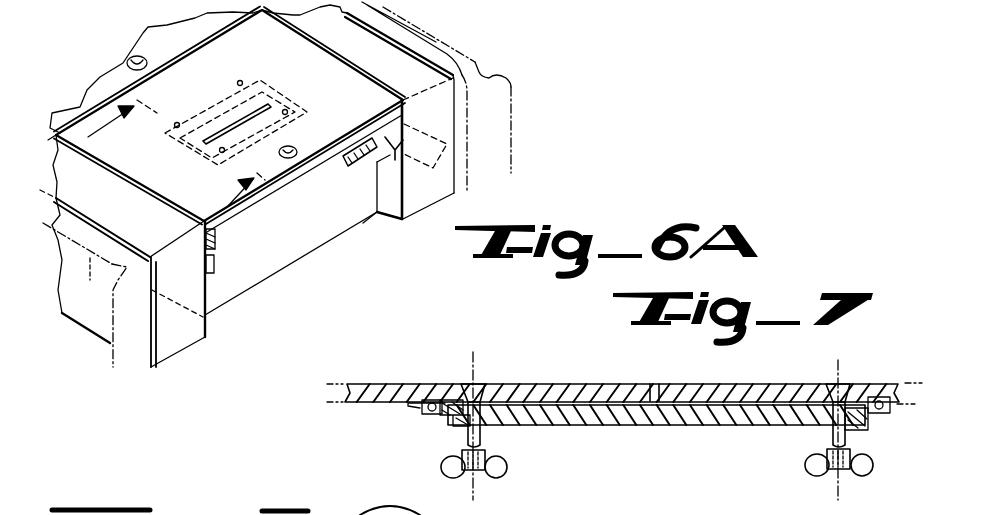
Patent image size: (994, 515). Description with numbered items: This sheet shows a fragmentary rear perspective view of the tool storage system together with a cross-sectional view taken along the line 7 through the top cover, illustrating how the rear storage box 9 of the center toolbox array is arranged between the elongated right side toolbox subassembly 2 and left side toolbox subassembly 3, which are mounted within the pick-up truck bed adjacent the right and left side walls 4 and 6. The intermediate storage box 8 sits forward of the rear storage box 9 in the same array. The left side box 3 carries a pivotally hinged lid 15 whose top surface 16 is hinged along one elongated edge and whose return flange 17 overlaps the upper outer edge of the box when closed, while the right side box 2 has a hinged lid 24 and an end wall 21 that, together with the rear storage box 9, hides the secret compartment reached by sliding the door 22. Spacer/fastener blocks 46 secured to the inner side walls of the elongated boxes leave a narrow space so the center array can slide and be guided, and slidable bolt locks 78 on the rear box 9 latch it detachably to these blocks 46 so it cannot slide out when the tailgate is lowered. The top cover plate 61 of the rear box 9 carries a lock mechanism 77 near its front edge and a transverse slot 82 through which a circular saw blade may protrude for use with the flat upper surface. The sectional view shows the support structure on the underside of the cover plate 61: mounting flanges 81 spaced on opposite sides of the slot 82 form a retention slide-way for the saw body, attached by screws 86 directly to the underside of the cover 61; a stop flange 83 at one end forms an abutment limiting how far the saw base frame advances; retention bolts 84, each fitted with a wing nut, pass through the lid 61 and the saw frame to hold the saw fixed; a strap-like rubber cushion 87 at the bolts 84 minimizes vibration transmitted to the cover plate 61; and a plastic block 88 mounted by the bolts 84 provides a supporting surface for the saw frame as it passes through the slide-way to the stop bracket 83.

In FIG. 6A, the right side toolbox subassembly 2 is at (421, 196).
In FIG. 6A, the left side toolbox subassembly 3 is at (190, 350).
In FIG. 6A, the right side wall 4 is at (437, 52).
In FIG. 6A, the left side wall 6 is at (75, 266).
In FIG. 6A, the front storage box 7 is at (176, 153).
In FIG. 6A, the intermediate storage box 8 is at (178, 54).
In FIG. 6A, the rear storage box 9 is at (296, 255).
In FIG. 6A, the lid 15 is at (63, 162).
In FIG. 6A, the top surface 16 is at (114, 202).
In FIG. 6A, the return flange 17 is at (100, 248).
In FIG. 6A, the end wall 21 is at (440, 173).
In FIG. 6A, the door 22 is at (391, 189).
In FIG. 6A, the hinged lid 24 is at (392, 64).
In FIG. 6A, the spacer/fastener blocks 46 is at (403, 148).
In FIG. 6A, the top cover plate 61 is at (323, 78).
In FIG. 7, the top cover plate 61 is at (532, 393).
In FIG. 6A, the lock mechanism 77 is at (127, 60).
In FIG. 6A, the slidable bolt locks 78 is at (350, 162).
In FIG. 6A, the mounting flanges 81 is at (232, 94).
In FIG. 6A, the slot 82 is at (260, 101).
In FIG. 7, the slot 82 is at (655, 390).
In FIG. 7, the stop flange 83 is at (420, 406).
In FIG. 7, the retention bolts 84 is at (467, 437).
In FIG. 7, the screws 86 is at (427, 414).
In FIG. 7, the rubber cushion 87 is at (703, 412).
In FIG. 7, the plastic block 88 is at (818, 427).